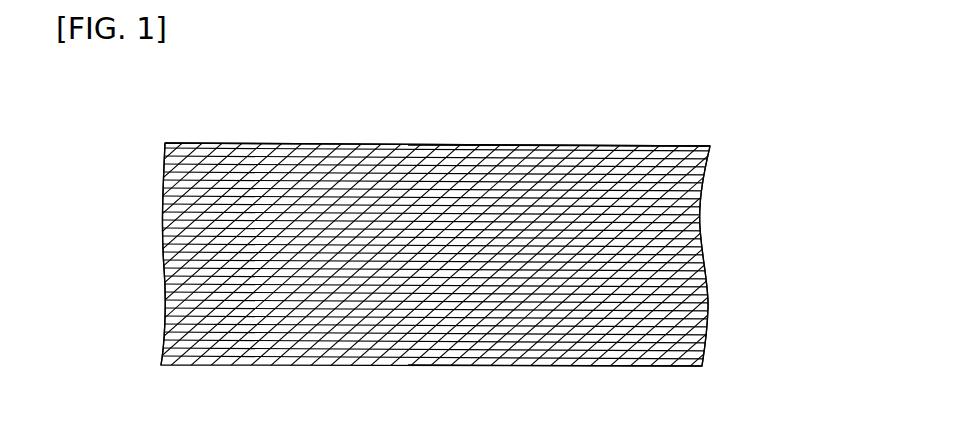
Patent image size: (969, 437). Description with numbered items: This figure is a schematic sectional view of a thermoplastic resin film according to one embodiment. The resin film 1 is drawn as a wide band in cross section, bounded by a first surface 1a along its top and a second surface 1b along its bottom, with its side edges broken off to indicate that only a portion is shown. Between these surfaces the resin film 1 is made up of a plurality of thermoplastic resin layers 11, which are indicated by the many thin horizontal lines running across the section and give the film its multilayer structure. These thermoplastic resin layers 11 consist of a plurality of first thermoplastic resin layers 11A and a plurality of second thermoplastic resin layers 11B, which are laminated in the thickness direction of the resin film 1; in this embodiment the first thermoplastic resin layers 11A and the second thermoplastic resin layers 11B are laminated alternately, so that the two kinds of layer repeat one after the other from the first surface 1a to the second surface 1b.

The resin film 1 is at (218, 97).
The thermoplastic resin layers 11 is at (418, 139).
The first surface 1a is at (572, 139).
The second surface 1b is at (558, 359).
The first thermoplastic resin layer 11A is at (150, 230).
The second thermoplastic resin layer 11B is at (692, 200).